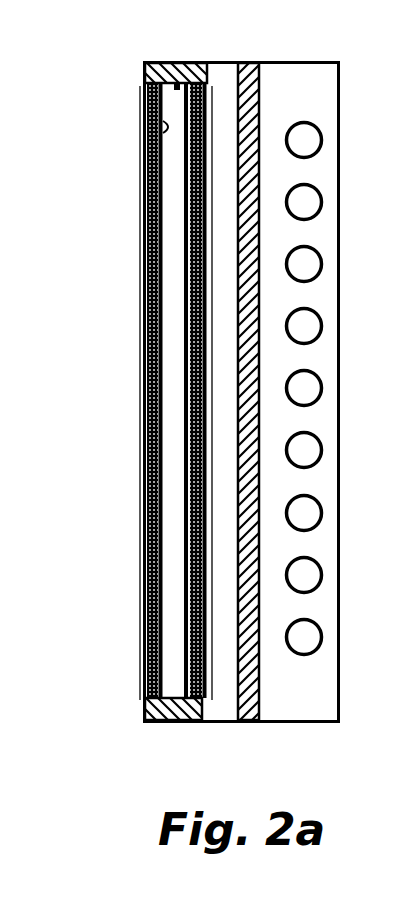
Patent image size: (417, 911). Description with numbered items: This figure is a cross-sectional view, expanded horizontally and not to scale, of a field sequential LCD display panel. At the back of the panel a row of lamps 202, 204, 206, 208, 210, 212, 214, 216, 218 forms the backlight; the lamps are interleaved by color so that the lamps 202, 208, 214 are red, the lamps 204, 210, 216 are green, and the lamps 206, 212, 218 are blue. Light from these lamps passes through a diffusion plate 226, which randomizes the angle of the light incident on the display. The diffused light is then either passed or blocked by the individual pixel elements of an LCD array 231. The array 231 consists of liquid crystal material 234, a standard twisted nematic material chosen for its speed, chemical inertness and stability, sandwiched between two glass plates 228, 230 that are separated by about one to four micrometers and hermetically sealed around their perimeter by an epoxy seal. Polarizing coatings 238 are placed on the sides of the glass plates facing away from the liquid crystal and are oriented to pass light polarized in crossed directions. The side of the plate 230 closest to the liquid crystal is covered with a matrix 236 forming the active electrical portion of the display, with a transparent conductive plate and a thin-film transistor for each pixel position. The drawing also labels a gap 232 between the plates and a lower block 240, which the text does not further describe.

The red lamp 202 is at (321, 141).
The green lamp 204 is at (321, 199).
The blue lamp 206 is at (321, 265).
The red lamp 208 is at (321, 324).
The green lamp 210 is at (319, 380).
The blue lamp 212 is at (317, 440).
The red lamp 214 is at (317, 501).
The green lamp 216 is at (317, 563).
The blue lamp 218 is at (317, 625).
The diffusion plate 226 is at (250, 723).
The glass plate 228 is at (198, 62).
The glass plate 230 is at (146, 63).
The LCD array 231 is at (106, 417).
The gap 232 is at (187, 200).
The liquid crystal material 234 is at (177, 63).
The matrix 236 is at (138, 135).
The polarizing coatings 238 is at (142, 692).
The bottom insulator block 240 is at (170, 726).